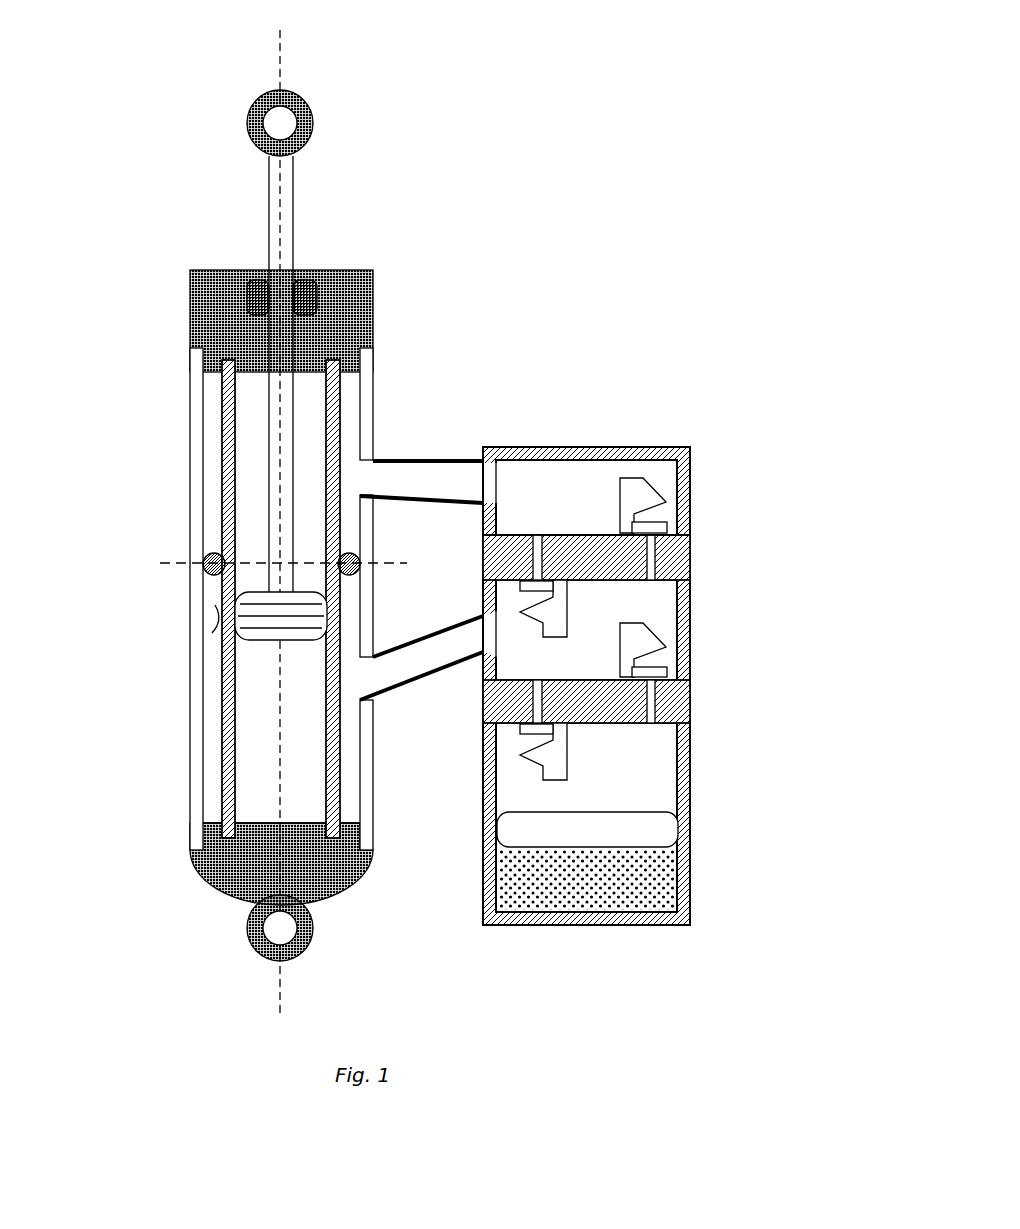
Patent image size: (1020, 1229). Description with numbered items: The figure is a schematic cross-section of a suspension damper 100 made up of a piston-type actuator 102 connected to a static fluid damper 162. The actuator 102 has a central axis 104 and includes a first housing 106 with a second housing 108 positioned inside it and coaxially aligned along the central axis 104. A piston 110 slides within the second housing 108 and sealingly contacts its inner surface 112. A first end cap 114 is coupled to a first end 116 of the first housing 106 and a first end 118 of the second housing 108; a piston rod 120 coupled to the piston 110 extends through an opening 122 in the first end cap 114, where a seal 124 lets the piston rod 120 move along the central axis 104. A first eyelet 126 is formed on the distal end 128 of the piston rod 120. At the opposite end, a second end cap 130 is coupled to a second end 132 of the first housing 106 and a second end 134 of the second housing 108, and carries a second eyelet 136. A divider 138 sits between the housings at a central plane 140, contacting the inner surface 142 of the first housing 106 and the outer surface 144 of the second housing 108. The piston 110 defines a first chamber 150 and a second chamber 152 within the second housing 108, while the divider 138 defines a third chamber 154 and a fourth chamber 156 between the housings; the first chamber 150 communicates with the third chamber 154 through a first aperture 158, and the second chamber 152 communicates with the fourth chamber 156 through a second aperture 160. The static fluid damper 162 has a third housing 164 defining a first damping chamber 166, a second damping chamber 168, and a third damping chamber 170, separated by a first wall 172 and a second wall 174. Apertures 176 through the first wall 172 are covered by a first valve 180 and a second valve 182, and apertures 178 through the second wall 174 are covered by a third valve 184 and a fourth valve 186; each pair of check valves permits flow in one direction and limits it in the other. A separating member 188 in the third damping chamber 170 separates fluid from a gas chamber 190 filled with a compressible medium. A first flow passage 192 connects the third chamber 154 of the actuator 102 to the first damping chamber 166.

The suspension damper 100 is at (503, 160).
The piston-type actuator 102 is at (135, 242).
The central axis 104 is at (275, 60).
The first housing 106 is at (190, 420).
The second housing 108 is at (215, 466).
The piston 110 is at (300, 628).
The inner surface 112 is at (325, 550).
The first end cap 114 is at (192, 298).
The first end 116 is at (196, 356).
The first end 118 is at (222, 375).
The piston rod 120 is at (297, 242).
The opening 122 is at (300, 258).
The seal 124 is at (250, 285).
The first eyelet 126 is at (308, 102).
The distal end 128 is at (268, 166).
The second end cap 130 is at (215, 868).
The second end 132 is at (203, 830).
The second end 134 is at (222, 797).
The second eyelet 136 is at (264, 952).
The divider 138 is at (200, 548).
The central plane 140 is at (180, 567).
The inner surface 142 is at (212, 633).
The outer surface 144 is at (220, 660).
The first chamber 150 is at (312, 457).
The second chamber 152 is at (305, 735).
The third chamber 154 is at (352, 380).
The fourth chamber 156 is at (352, 813).
The first aperture 158 is at (352, 403).
The second aperture 160 is at (352, 793).
The static fluid damper 162 is at (672, 395).
The third housing 164 is at (662, 605).
The first damping chamber 166 is at (556, 480).
The second damping chamber 168 is at (690, 556).
The third damping chamber 170 is at (657, 745).
The first wall 172 is at (483, 560).
The second wall 174 is at (490, 705).
The apertures 176 is at (588, 531).
The apertures 178 is at (588, 673).
The first valve 180 is at (678, 497).
The second valve 182 is at (490, 598).
The third valve 184 is at (680, 660).
The fourth valve 186 is at (518, 743).
The separating member 188 is at (680, 830).
The gas chamber 190 is at (670, 872).
The first flow passage 192 is at (436, 490).